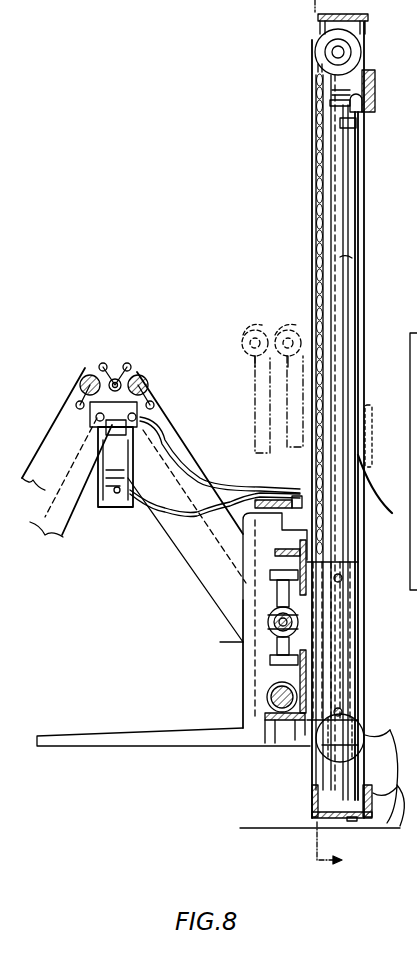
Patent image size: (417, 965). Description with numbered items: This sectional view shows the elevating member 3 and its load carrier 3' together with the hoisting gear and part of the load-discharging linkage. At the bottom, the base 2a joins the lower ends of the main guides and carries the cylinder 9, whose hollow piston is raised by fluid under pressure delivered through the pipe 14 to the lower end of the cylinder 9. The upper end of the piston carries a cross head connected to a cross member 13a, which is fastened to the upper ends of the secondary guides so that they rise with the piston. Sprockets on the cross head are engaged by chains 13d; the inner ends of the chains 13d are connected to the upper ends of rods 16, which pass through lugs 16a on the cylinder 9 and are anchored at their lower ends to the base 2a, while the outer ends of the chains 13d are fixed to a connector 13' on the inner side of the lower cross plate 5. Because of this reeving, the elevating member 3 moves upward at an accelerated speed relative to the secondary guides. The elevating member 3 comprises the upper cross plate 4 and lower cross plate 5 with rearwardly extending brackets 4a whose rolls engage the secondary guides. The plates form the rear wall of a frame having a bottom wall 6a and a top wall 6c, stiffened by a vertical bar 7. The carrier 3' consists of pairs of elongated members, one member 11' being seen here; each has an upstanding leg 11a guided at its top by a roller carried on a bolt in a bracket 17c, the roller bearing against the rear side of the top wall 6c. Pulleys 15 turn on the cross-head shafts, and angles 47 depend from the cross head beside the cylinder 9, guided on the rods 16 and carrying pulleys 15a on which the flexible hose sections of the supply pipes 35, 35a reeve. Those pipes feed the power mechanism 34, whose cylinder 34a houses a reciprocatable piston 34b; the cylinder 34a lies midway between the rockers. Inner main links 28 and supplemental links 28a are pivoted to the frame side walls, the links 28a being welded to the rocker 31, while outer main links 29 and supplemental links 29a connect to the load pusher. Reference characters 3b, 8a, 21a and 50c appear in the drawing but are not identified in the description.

The base 2a is at (363, 820).
The elevating member 3 is at (367, 551).
The bolt 3b is at (342, 578).
The load carrier 3' is at (222, 664).
The upper cross plate 4 is at (292, 542).
The bracket 4a is at (314, 732).
The lower cross plate 5 is at (293, 745).
The bottom wall 6a is at (265, 743).
The top wall 6c is at (278, 503).
The bar 7 is at (320, 436).
The carriage 8a is at (275, 552).
The cylinder 9 is at (348, 162).
The upstanding leg 11a is at (255, 642).
The carrier member 11' is at (173, 750).
The cross member 13a is at (340, 52).
The chain 13d is at (366, 71).
The connector 13' is at (349, 641).
The pipe 14 is at (387, 827).
The pulley 15 is at (316, 53).
The pulley 15a is at (352, 765).
The rod 16 is at (358, 225).
The lug 16a is at (357, 128).
The bracket 17c is at (275, 620).
The roller 21a is at (267, 618).
The inner main link 28 is at (172, 543).
The inner supplemental link 28a is at (178, 432).
The outer main link 29 is at (61, 560).
The outer supplemental link 29a is at (45, 440).
The rocker 31 is at (87, 374).
The power mechanism 34 is at (100, 477).
The cylinder 34a is at (112, 508).
The piston 34b is at (100, 482).
The fluid supply pipe 35 is at (167, 507).
The fluid supply pipe 35a is at (202, 470).
The angle 47 is at (352, 258).
The chain anchor block 50c is at (372, 98).